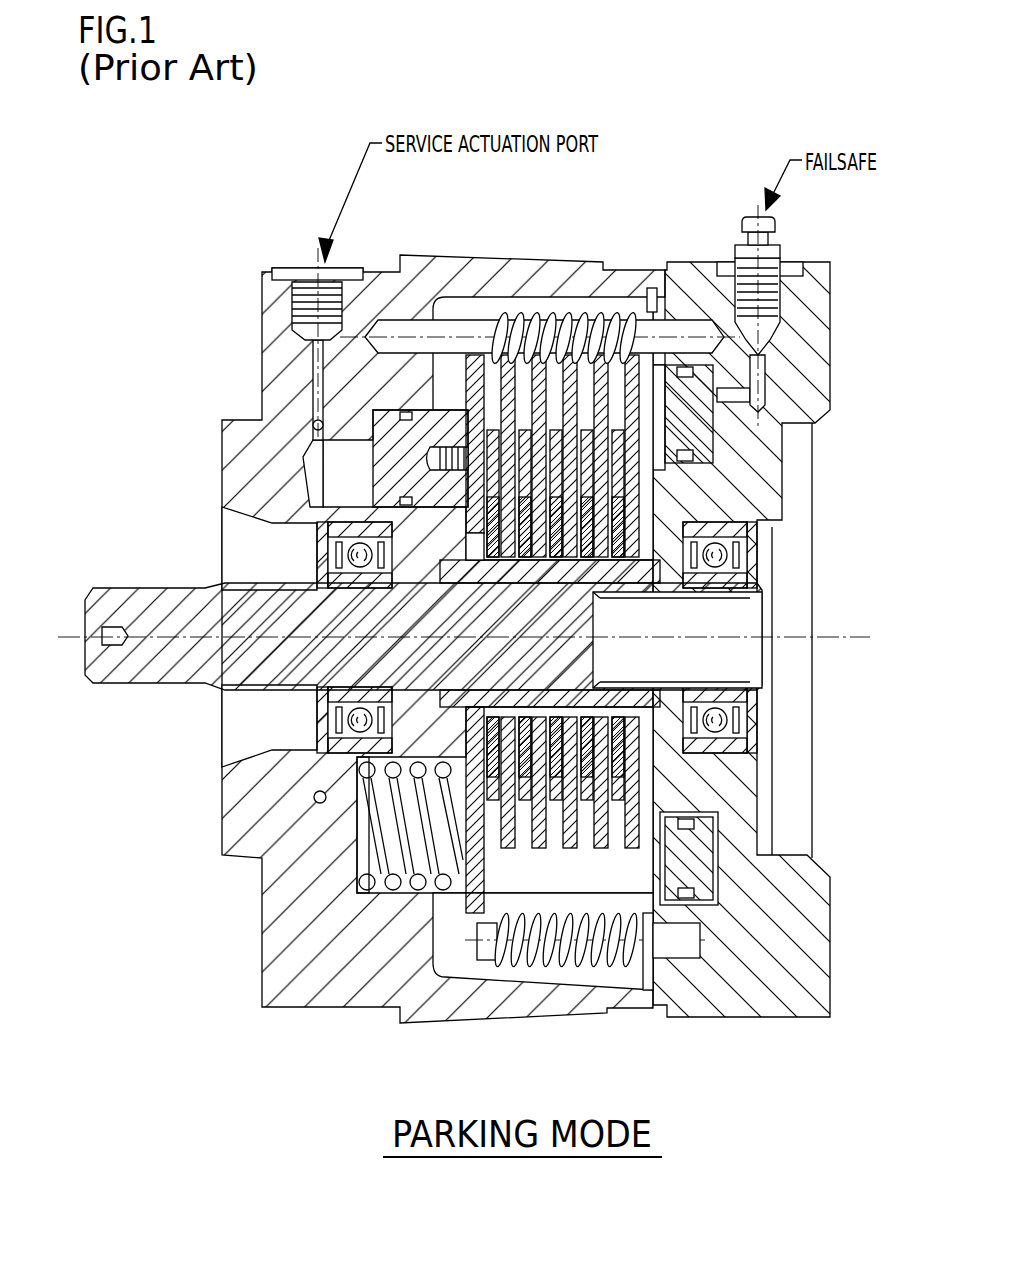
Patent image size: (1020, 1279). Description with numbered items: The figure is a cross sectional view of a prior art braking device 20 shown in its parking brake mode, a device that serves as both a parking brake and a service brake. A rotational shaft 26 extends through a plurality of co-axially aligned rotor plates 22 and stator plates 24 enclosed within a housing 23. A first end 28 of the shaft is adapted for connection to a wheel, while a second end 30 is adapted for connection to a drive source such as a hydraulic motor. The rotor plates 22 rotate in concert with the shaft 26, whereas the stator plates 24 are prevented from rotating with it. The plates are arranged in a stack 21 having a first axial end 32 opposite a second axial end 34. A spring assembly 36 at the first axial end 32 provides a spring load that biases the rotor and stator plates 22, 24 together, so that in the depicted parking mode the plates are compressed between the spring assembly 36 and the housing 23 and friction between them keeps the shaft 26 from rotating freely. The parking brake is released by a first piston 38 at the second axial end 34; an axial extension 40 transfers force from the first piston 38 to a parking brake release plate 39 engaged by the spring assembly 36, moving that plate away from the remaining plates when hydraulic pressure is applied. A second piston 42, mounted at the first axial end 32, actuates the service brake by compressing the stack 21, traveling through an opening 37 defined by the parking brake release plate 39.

The braking device 20 is at (187, 336).
The stack 21 is at (513, 378).
The rotor plates 22 is at (553, 430).
The housing 23 is at (292, 1008).
The stator plates 24 is at (598, 385).
The rotational shaft 26 is at (132, 587).
The first end 28 is at (84, 660).
The second end 30 is at (596, 649).
The first axial end 32 is at (466, 368).
The second axial end 34 is at (655, 487).
The spring assembly 36 is at (430, 890).
The opening 37 is at (466, 403).
The first piston 38 is at (678, 873).
The parking brake release plate 39 is at (470, 895).
The axial extension 40 is at (560, 895).
The second piston 42 is at (377, 437).